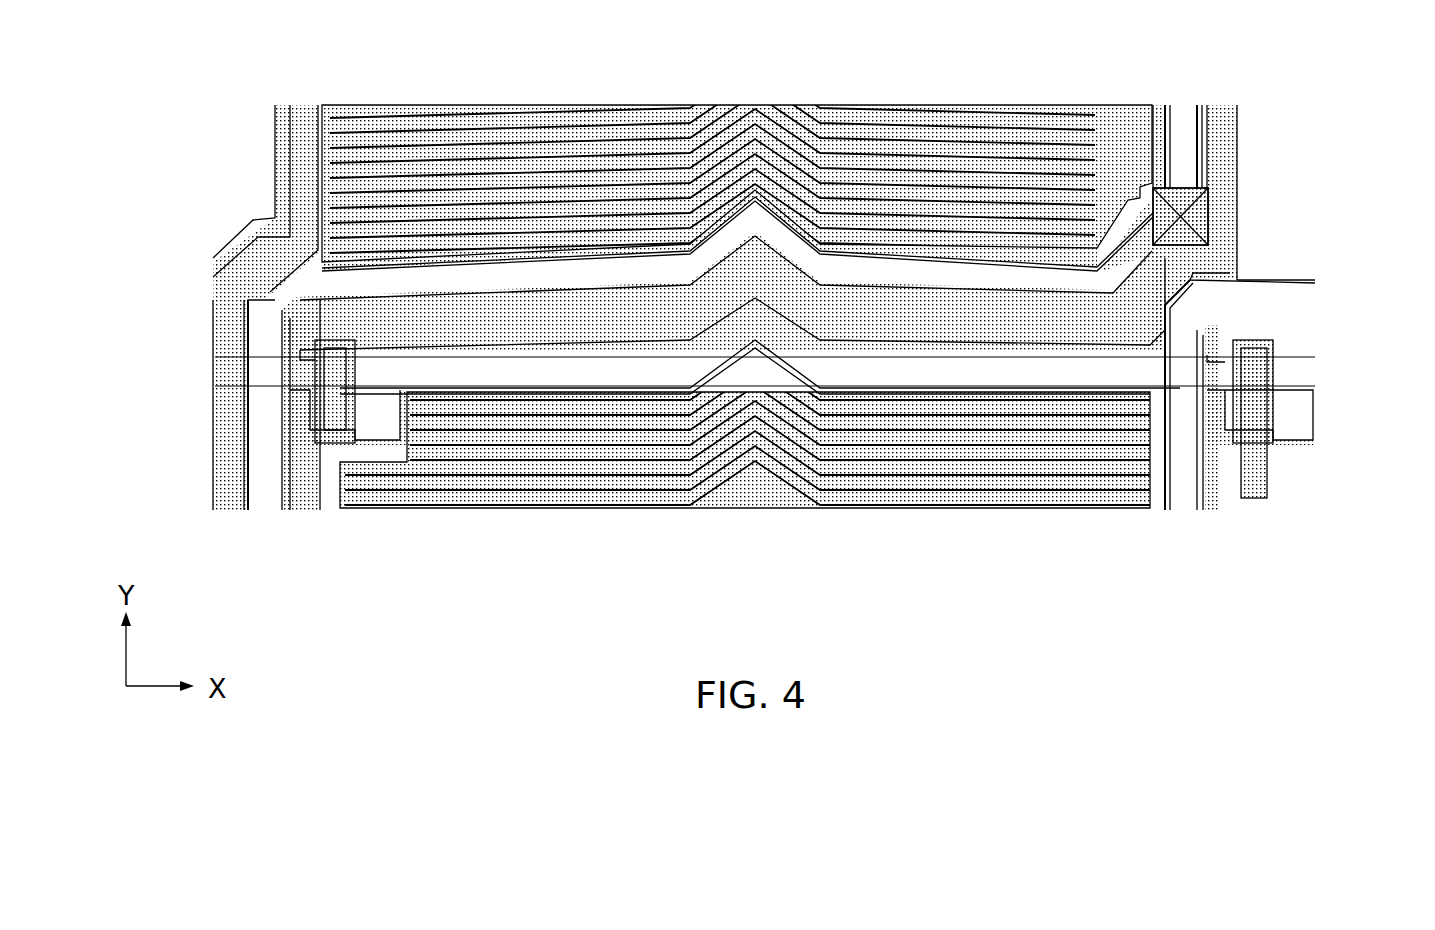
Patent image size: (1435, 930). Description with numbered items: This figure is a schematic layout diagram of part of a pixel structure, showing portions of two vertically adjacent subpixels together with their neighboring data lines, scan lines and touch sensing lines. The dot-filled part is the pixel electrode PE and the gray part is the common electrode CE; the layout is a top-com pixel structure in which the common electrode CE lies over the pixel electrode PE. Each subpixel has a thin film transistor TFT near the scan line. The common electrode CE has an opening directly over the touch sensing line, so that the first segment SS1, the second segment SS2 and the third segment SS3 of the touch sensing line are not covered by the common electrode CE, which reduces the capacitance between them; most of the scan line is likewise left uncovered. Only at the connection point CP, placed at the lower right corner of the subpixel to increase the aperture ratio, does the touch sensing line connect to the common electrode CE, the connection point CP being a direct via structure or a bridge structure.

The pixel electrode PE is at (964, 106).
The common electrode CE is at (878, 240).
The third segment SS3 is at (561, 258).
The first segment SS1 is at (250, 460).
The thin film transistor TFT is at (352, 398).
The second segment SS2 is at (1200, 168).
The connection point CP is at (1212, 210).